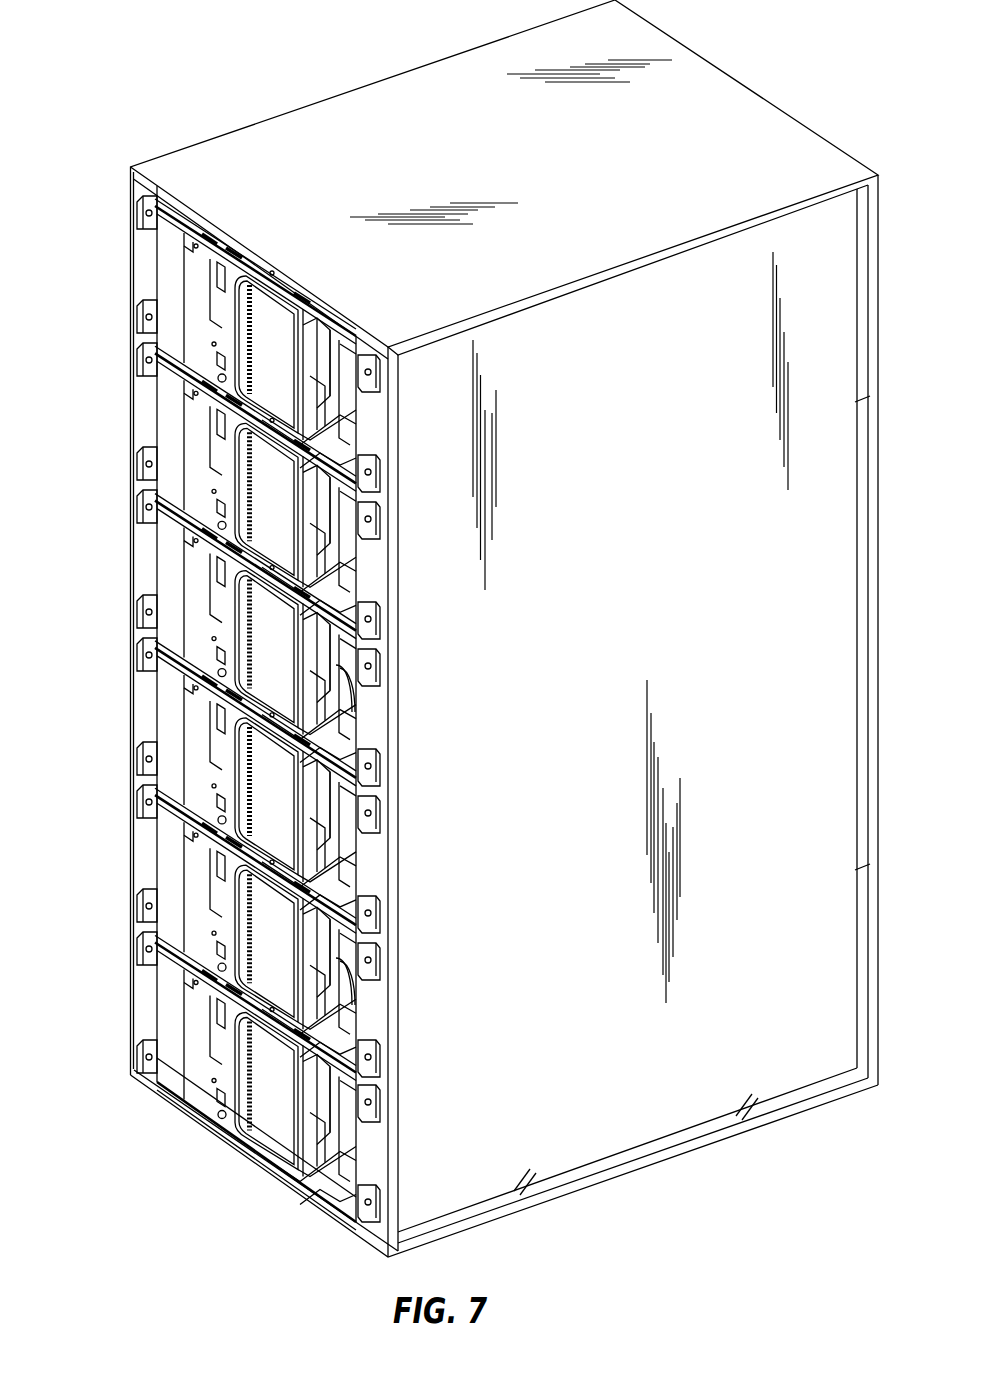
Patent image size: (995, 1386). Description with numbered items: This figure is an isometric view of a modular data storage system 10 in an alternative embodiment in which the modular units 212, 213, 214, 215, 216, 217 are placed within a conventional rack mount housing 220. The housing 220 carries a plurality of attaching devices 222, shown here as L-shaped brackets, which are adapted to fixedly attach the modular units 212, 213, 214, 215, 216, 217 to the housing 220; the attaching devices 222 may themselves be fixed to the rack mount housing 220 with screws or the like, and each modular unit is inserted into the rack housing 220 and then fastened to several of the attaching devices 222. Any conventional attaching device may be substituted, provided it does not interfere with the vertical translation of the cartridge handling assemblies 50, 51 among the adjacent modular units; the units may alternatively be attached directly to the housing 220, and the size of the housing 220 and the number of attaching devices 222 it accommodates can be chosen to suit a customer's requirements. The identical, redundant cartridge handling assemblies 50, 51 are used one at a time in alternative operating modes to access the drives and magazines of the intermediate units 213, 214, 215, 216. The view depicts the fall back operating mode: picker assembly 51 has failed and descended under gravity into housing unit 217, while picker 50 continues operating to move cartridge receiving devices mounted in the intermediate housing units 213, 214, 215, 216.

The modular data storage system 10 is at (270, 70).
The rack mount housing 220 is at (760, 81).
The modular unit 212 is at (127, 265).
The modular unit 213 is at (127, 409).
The modular unit 214 is at (127, 556).
The modular unit 215 is at (127, 697).
The modular unit 216 is at (127, 836).
The modular unit 217 is at (127, 983).
The attaching devices 222 is at (137, 500).
The cartridge handling assembly 50 is at (360, 690).
The cartridge handling assembly 51 is at (361, 985).